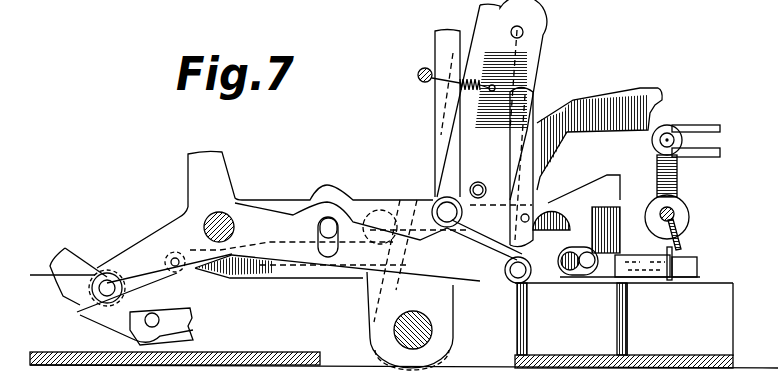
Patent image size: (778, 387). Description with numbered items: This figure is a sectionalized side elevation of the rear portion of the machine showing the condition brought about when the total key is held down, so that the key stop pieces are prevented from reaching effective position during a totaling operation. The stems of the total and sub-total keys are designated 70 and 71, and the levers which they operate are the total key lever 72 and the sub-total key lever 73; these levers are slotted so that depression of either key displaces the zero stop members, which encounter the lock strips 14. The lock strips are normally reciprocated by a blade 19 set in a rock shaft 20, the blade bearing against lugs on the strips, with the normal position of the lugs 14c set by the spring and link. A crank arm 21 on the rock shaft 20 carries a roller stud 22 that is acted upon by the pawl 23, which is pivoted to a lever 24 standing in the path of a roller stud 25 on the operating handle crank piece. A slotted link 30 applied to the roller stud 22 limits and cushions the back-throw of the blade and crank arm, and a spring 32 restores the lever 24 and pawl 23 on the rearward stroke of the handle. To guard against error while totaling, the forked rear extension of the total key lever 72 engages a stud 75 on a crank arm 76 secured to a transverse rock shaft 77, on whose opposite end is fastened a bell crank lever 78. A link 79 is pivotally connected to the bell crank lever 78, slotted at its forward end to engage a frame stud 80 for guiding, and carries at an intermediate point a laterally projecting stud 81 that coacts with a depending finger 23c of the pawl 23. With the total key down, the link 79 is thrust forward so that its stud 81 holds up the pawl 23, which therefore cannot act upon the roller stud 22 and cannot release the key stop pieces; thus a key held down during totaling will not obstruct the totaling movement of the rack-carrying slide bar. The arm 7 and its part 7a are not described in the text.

The arm 7 is at (482, 8).
The pivot pin of arm 7a is at (422, 330).
The lock strips 14 is at (697, 268).
The lugs 14c is at (670, 280).
The blade 19 is at (681, 248).
The rock shaft 20 is at (675, 213).
The crank arm 21 is at (677, 183).
The roller stud 22 is at (673, 120).
The pawl 23 is at (627, 100).
The depending finger 23c is at (548, 205).
The lever 24 is at (537, 32).
The roller stud 25 is at (442, 245).
The slotted link 30 is at (713, 127).
The spring 32 is at (433, 83).
The stem of total key 70 is at (532, 110).
The stem of sub-total key 71 is at (450, 47).
The total key lever 72 is at (290, 220).
The sub-total key lever 73 is at (273, 202).
The stud 75 is at (85, 303).
The crank arm 76 is at (193, 328).
The transverse rock shaft 77 is at (140, 327).
The bell crank lever 78 is at (173, 290).
The link 79 is at (253, 272).
The frame stud 80 is at (587, 268).
The laterally projecting stud 81 is at (518, 262).